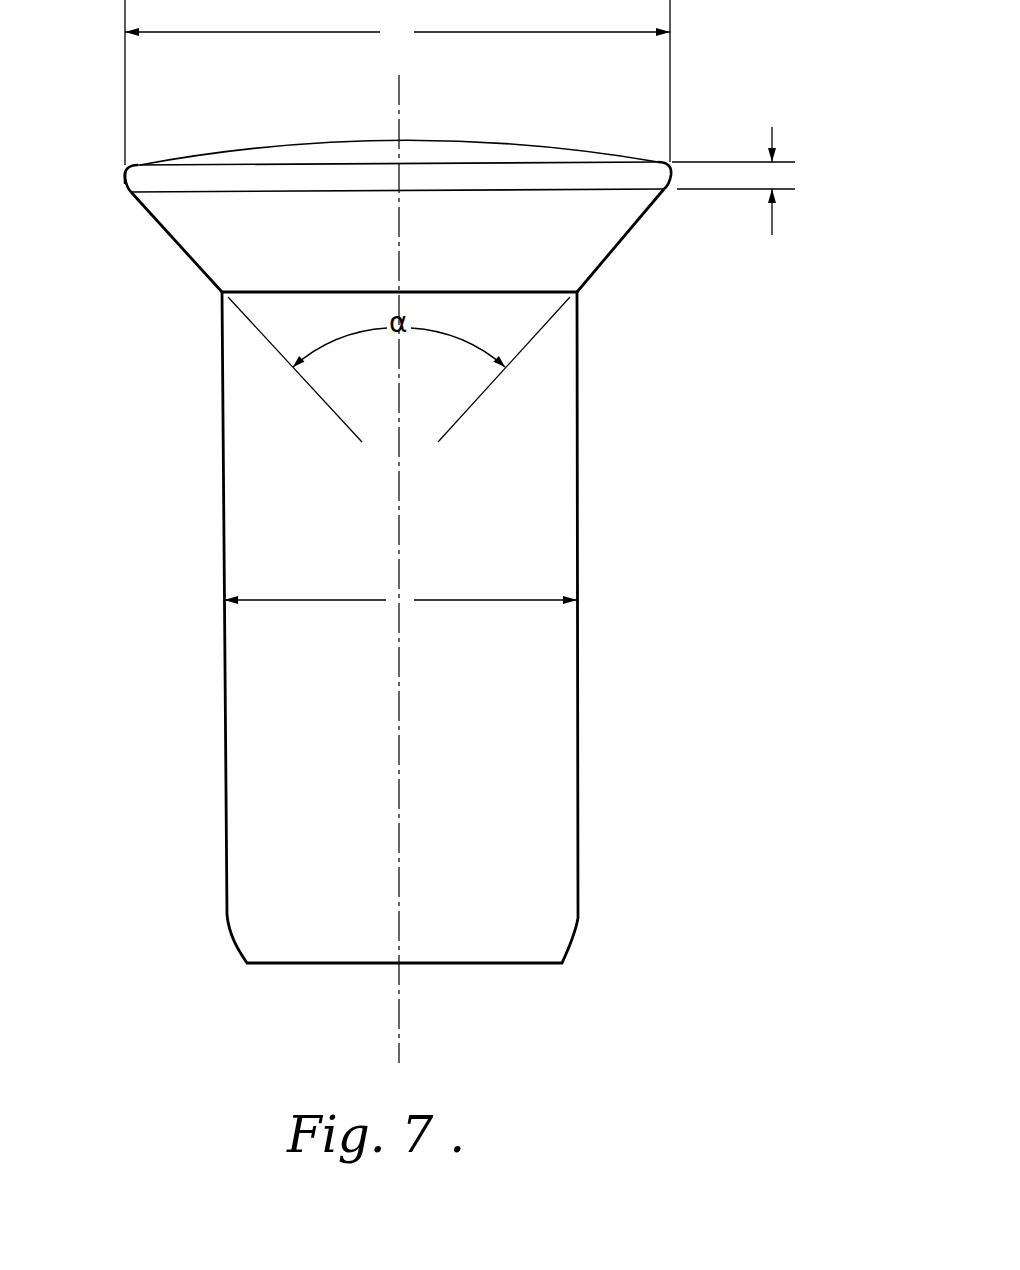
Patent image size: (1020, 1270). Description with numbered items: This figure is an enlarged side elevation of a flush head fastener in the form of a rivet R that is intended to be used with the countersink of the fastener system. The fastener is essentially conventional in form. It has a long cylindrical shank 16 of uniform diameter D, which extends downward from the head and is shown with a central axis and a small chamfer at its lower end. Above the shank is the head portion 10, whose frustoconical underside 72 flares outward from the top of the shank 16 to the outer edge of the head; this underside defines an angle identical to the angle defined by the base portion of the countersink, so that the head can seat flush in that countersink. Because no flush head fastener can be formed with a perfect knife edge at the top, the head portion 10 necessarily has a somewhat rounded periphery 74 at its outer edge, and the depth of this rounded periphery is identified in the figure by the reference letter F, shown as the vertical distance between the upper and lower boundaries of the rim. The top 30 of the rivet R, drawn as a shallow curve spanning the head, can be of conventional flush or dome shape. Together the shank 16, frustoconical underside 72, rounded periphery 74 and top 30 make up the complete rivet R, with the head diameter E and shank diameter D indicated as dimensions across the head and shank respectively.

The head portion 10 is at (374, 511).
The cylindrical shank 16 is at (567, 697).
The top 30 is at (362, 141).
The frustoconical underside 72 is at (600, 263).
The rounded periphery 74 is at (124, 181).
The rivet R is at (115, 165).
The depth of the rounded periphery F is at (772, 177).
The head diameter E is at (397, 82).
The diameter of the shank D is at (400, 600).